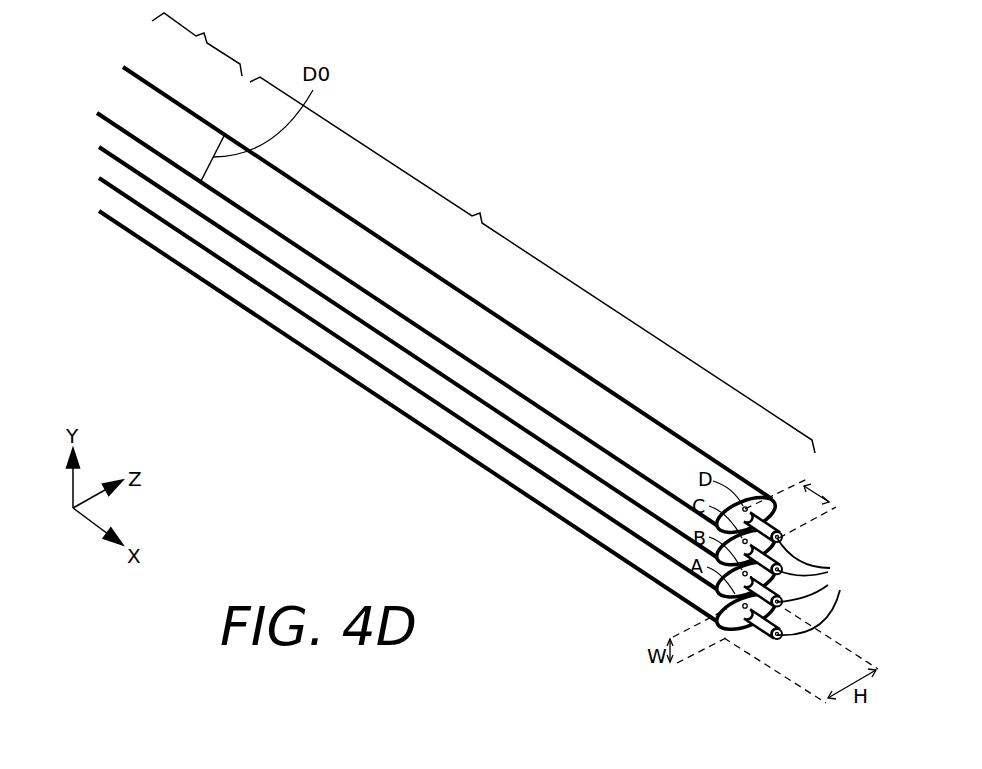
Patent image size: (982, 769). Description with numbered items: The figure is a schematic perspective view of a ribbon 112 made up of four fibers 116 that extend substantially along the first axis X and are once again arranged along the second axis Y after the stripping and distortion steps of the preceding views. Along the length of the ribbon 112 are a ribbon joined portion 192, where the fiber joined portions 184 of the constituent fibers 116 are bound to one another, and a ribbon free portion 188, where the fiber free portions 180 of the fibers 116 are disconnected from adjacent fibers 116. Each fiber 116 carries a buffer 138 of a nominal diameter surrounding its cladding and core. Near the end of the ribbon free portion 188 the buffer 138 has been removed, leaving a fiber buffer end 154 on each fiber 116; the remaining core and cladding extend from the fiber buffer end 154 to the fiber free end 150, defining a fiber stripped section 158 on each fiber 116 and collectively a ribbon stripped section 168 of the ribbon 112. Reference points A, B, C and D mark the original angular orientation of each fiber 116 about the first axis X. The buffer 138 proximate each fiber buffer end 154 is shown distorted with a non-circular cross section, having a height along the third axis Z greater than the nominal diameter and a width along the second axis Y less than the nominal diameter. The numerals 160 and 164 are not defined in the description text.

The ribbon 112 is at (278, 411).
The fiber 116 is at (153, 122).
The buffer 138 is at (293, 218).
The fiber free end 150 is at (846, 586).
The curved end surface 160 is at (846, 586).
The fiber buffer end 154 is at (646, 569).
The fiber end pin 164 is at (745, 505).
The fiber stripped section 158 is at (836, 501).
The ribbon stripped section 168 is at (815, 491).
The fiber free portion 180 is at (532, 265).
The ribbon free portion 188 is at (532, 265).
The fiber joined portion 184 is at (222, 41).
The ribbon joined portion 192 is at (222, 41).